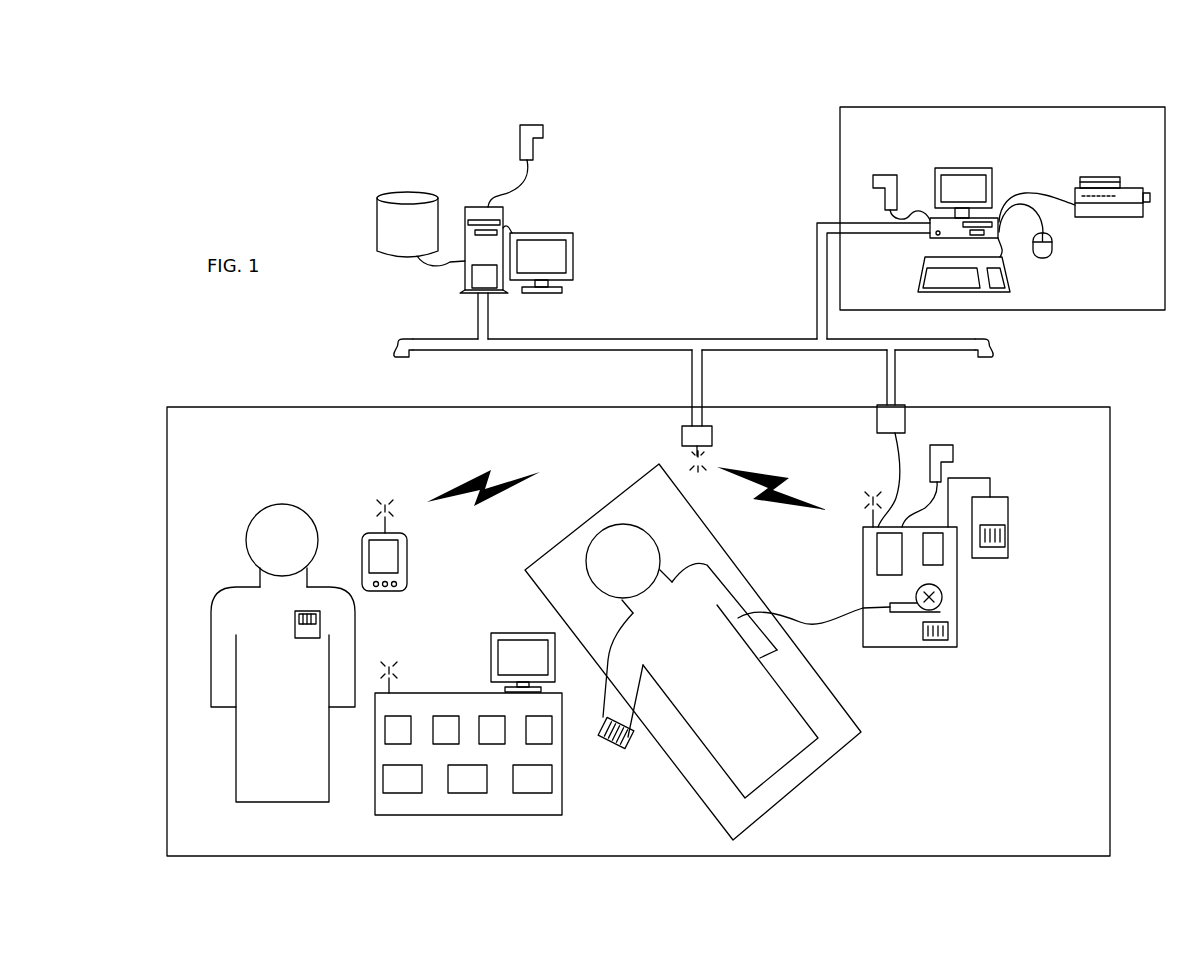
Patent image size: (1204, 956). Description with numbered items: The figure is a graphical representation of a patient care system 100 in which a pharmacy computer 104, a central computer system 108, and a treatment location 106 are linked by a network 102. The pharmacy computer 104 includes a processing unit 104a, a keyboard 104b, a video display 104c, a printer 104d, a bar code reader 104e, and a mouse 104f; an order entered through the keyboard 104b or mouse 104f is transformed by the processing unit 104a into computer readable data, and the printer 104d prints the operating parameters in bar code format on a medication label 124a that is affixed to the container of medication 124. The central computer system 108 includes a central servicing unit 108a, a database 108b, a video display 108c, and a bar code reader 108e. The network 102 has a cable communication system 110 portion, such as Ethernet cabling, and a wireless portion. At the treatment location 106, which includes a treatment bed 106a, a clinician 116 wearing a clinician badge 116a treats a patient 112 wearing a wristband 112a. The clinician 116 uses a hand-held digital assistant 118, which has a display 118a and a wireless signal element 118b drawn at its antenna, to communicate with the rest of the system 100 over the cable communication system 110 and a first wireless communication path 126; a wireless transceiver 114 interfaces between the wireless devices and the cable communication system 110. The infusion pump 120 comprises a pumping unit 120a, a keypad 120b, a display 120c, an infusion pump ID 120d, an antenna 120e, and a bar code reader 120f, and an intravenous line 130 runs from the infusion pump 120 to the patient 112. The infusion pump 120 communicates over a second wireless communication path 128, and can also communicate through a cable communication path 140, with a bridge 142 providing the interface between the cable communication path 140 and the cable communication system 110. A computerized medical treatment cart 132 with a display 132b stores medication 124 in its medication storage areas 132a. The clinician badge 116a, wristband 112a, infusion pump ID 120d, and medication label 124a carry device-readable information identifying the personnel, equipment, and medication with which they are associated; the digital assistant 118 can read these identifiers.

The patient care system 100 is at (230, 118).
The network 102 is at (1043, 348).
The pharmacy computer 104 is at (865, 107).
The processing unit 104a is at (930, 238).
The keyboard 104b is at (1010, 277).
The video display 104c is at (975, 168).
The printer 104d is at (1128, 188).
The bar code reader 104e is at (883, 175).
The mouse 104f is at (1043, 258).
The treatment location 106 is at (1110, 578).
The treatment bed 106a is at (826, 769).
The central computer system 108 is at (365, 157).
The central servicing unit 108a is at (465, 270).
The database 108b is at (415, 192).
The video display 108c is at (543, 233).
The bar code reader 108e is at (530, 125).
The cable communication system 110 is at (632, 339).
The patient 112 is at (772, 757).
The wristband 112a is at (629, 750).
The wireless transceiver 114 is at (712, 433).
The clinician 116 is at (320, 787).
The clinician badge 116a is at (300, 638).
The digital assistant 118 is at (407, 556).
The display 118a is at (436, 525).
The wireless signal 118b is at (366, 482).
The infusion pump 120 is at (875, 648).
The pumping unit 120a is at (942, 596).
The keypad 120b is at (943, 555).
The display 120c is at (877, 552).
The infusion pump ID 120d is at (937, 647).
The antenna 120e is at (850, 528).
The bar code reader 120f is at (950, 443).
The medication 124 is at (1008, 510).
The medication label 124a is at (1005, 535).
The first wireless communication path 126 is at (467, 482).
The second wireless communication path 128 is at (775, 509).
The intravenous line 130 is at (823, 620).
The medical treatment cart 132 is at (509, 740).
The medication storage areas 132a is at (407, 793).
The display 132b is at (491, 672).
The cable communication path 140 is at (899, 468).
The bridge 142 is at (905, 408).